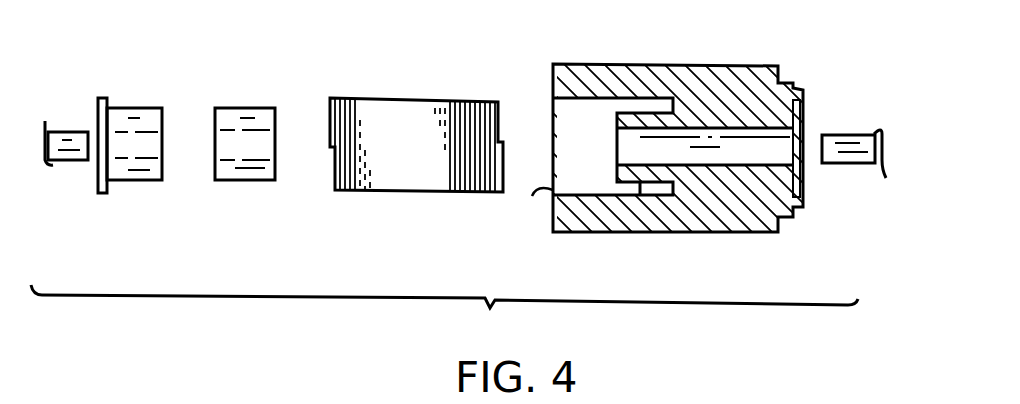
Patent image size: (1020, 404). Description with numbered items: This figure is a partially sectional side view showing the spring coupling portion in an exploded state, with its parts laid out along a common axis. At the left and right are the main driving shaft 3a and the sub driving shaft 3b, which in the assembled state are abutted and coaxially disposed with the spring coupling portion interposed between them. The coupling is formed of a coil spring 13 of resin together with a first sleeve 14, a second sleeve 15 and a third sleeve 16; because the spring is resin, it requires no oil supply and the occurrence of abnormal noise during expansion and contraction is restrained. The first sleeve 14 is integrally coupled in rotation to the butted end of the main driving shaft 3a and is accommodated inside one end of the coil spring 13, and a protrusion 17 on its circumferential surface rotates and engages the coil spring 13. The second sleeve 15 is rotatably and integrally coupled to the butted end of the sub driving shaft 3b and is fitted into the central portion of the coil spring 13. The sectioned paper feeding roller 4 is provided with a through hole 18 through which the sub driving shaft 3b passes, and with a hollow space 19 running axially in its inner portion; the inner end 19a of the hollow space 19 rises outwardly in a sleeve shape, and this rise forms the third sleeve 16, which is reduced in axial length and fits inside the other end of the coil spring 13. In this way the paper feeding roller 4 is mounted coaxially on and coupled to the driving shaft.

The main driving shaft 3a is at (66, 163).
The sub driving shaft 3b is at (848, 165).
The paper feeding roller 4 is at (705, 80).
The coil spring 13 is at (410, 195).
The first sleeve 14 is at (147, 109).
The second sleeve 15 is at (241, 183).
The third sleeve 16 is at (633, 176).
The protrusion 17 is at (111, 147).
The through hole 18 is at (728, 166).
The hollow space 19 is at (527, 209).
The inner end of hollow space 19a is at (668, 106).